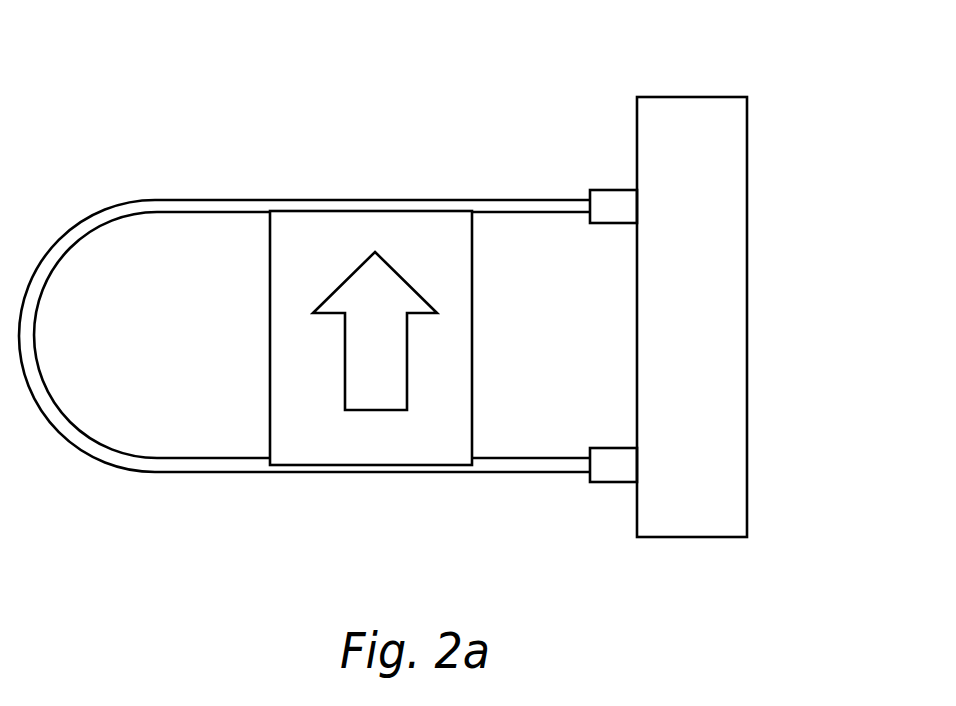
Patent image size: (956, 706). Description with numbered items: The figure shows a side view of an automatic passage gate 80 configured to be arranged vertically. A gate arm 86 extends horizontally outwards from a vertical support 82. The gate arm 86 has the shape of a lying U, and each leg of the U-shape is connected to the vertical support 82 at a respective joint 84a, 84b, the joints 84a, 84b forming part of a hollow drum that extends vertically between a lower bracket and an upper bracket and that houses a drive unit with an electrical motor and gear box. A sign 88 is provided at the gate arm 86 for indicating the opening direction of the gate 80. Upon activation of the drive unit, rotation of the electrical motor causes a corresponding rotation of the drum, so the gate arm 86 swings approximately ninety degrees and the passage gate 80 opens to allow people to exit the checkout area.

The automatic passage gate 80 is at (424, 111).
The vertical support 82 is at (722, 303).
The joint 84a is at (613, 483).
The joint 84b is at (615, 188).
The gate arm 86 is at (138, 198).
The sign 88 is at (315, 420).